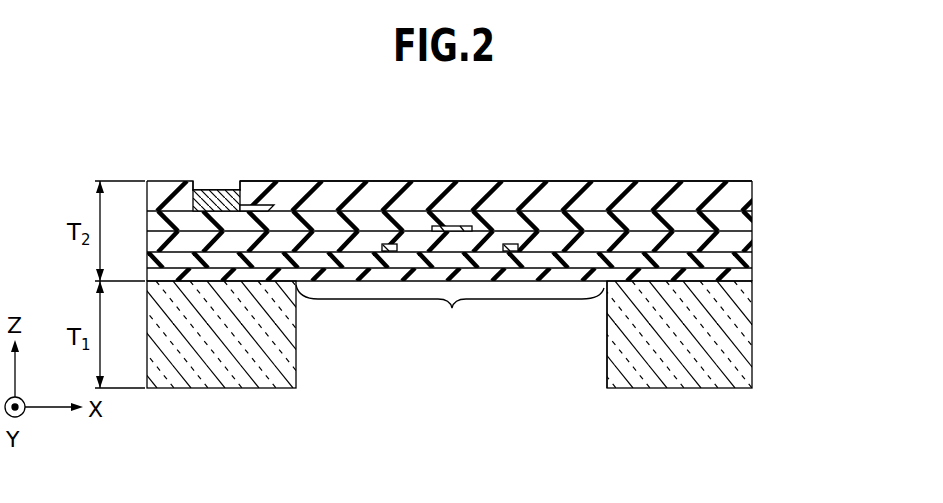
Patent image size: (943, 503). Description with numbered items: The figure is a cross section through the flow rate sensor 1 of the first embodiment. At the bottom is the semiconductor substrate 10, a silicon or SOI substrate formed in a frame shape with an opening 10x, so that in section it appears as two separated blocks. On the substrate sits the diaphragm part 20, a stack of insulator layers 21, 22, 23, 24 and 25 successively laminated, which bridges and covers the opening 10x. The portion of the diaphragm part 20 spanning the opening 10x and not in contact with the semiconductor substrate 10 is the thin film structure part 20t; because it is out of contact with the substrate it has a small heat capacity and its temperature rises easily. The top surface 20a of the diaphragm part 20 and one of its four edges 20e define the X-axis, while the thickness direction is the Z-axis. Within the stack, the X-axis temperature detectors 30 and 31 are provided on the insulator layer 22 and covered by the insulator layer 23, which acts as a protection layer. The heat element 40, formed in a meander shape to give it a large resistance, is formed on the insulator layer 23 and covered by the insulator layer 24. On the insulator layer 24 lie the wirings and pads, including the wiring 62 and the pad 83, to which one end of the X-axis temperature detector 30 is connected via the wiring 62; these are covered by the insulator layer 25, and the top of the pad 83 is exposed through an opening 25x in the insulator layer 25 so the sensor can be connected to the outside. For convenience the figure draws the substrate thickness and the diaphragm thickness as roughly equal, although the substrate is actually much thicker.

The flow rate sensor 1 is at (122, 132).
The semiconductor substrate 10 is at (740, 328).
The opening 10x is at (605, 333).
The diaphragm part 20 is at (499, 205).
The top surface 20a is at (670, 181).
The edge 20e is at (753, 181).
The thin film structure part 20t is at (452, 308).
The insulator layer 21 is at (753, 280).
The insulator layer 22 is at (753, 263).
The insulator layer 23 is at (753, 244).
The insulator layer 24 is at (753, 222).
The insulator layer 25 is at (753, 200).
The opening 25x is at (203, 182).
The X-axis temperature detector 30 is at (386, 244).
The X-axis temperature detector 31 is at (510, 244).
The heat element 40 is at (455, 226).
The wiring 62 is at (265, 205).
The pad 83 is at (228, 190).